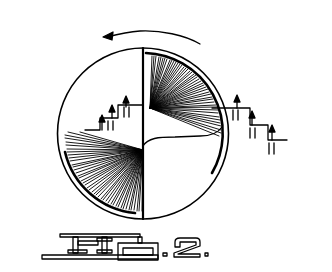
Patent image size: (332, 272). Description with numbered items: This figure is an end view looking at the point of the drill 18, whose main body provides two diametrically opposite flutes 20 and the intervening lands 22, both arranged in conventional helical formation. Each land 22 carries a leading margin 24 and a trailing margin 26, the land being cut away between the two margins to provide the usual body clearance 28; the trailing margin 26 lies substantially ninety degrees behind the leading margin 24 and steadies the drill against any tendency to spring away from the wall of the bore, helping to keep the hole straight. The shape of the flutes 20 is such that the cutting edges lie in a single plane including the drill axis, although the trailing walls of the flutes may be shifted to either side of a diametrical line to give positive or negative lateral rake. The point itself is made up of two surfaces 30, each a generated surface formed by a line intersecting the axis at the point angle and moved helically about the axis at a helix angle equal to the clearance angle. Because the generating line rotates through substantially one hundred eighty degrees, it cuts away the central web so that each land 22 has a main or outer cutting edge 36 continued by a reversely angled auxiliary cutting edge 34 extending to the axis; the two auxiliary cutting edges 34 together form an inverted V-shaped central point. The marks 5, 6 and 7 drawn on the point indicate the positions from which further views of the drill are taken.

The drill 18 is at (60, 100).
The flutes 20 is at (75, 85).
The lands 22 is at (192, 77).
The leading margin 24 is at (170, 41).
The trailing margin 26 is at (229, 126).
The body clearance 28 is at (205, 85).
The surfaces 30 is at (153, 73).
The auxiliary cutting edge 34 is at (150, 151).
The main cutting edge 36 is at (152, 186).
The position 5 is at (186, 91).
The position 6 is at (117, 112).
The position 7 is at (180, 126).